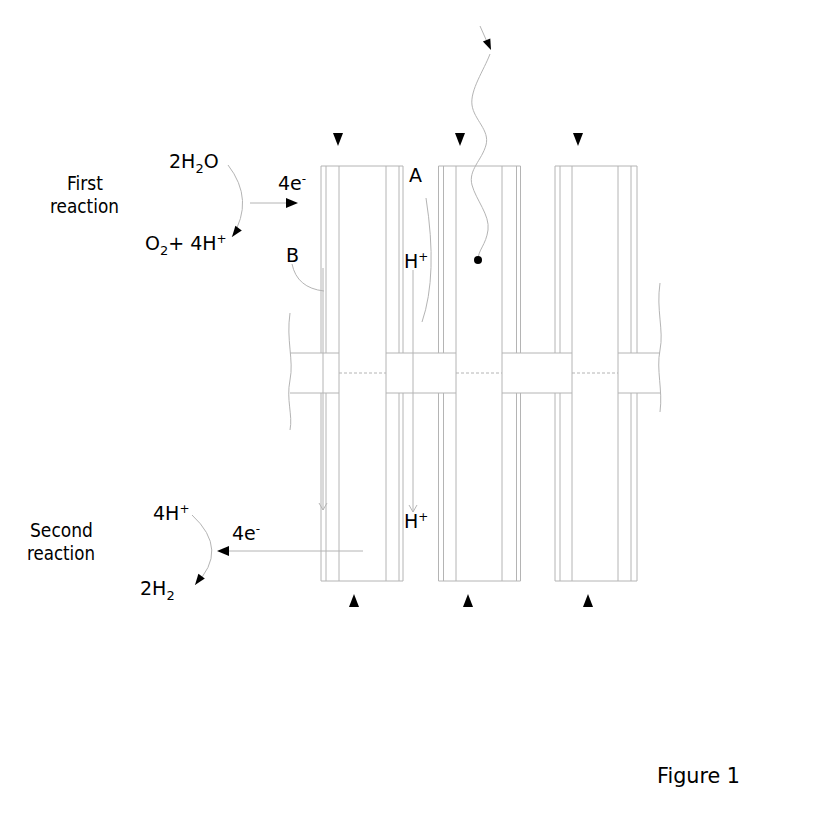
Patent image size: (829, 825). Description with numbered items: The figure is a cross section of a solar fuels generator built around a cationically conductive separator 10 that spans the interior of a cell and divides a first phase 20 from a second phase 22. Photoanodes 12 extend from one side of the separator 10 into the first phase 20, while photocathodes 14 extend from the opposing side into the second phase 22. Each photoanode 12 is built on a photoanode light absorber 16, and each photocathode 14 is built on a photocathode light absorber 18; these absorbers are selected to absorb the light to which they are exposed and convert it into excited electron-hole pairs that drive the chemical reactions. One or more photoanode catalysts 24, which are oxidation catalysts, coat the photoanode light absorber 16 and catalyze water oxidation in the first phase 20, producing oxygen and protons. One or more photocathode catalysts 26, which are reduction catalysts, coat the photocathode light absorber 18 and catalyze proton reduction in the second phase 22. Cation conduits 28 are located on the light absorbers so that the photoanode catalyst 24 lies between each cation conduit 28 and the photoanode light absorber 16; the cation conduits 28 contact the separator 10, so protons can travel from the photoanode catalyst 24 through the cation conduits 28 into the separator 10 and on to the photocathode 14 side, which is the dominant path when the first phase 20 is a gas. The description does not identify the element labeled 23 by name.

The separator 10 is at (310, 378).
The photoanode 12 is at (338, 130).
The photocathode 14 is at (354, 608).
The photoanode light absorber 16 is at (363, 195).
The photocathode light absorber 18 is at (373, 545).
The first phase 20 is at (759, 250).
The second phase 22 is at (724, 475).
The channel between electrodes 23 is at (556, 223).
The photoanode catalyst 24 is at (390, 188).
The photocathode catalyst 26 is at (623, 261).
The cation conduit 28 is at (324, 182).